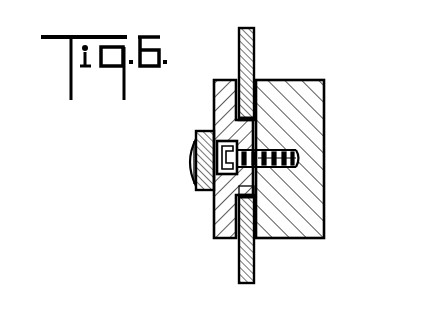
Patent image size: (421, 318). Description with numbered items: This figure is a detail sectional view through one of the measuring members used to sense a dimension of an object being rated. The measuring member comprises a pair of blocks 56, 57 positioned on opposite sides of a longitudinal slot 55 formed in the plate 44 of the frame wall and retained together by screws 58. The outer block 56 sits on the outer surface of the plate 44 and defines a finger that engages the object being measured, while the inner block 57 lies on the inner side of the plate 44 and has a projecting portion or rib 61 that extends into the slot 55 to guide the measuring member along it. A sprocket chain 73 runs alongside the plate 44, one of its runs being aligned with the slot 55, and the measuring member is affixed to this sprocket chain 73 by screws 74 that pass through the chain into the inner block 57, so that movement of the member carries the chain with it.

The plate 44 is at (253, 32).
The longitudinal slot 55 is at (251, 169).
The block 56 is at (302, 84).
The block 57 is at (221, 80).
The screws 58 is at (298, 157).
The rib 61 is at (244, 189).
The sprocket chain 73 is at (197, 180).
The screws 74 is at (187, 152).